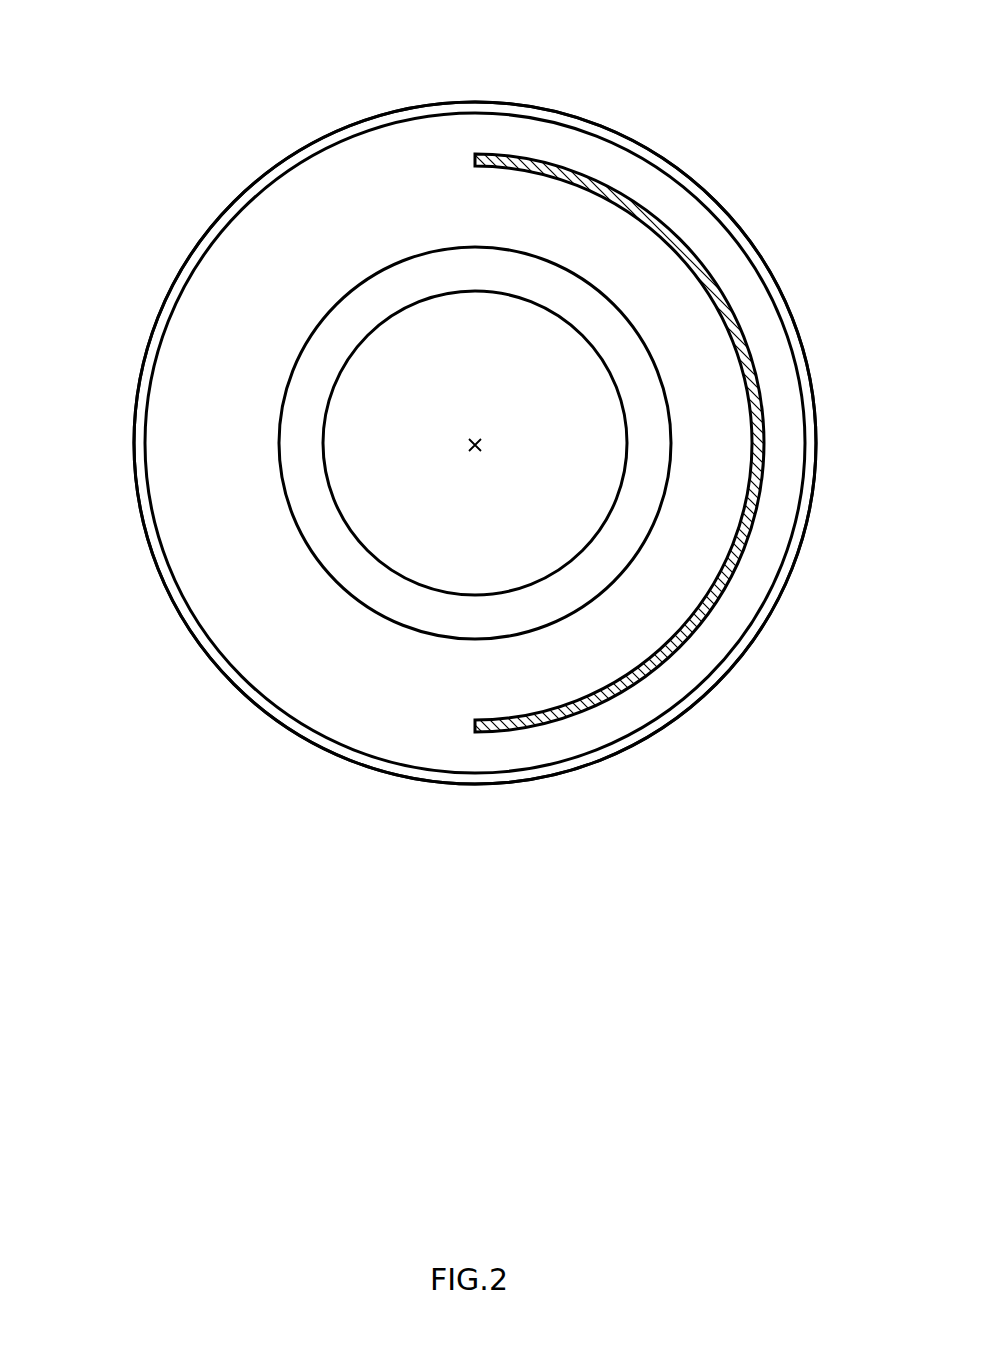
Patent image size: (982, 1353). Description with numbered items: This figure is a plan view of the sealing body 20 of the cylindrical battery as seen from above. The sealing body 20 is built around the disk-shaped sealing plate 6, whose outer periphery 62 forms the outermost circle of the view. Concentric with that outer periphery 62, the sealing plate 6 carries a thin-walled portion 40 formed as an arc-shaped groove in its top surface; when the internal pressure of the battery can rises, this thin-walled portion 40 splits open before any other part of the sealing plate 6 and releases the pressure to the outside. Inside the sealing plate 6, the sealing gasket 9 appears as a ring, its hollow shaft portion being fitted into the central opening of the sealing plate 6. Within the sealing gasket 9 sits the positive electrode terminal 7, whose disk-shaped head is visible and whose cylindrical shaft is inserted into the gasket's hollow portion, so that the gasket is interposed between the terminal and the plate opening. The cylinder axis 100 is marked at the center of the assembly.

The sealing body 20 is at (214, 88).
The sealing plate 6 is at (438, 145).
The thin-walled portion 40 is at (724, 294).
The sealing gasket 9 is at (307, 378).
The positive electrode terminal 7 is at (452, 578).
The outer periphery 62 is at (126, 517).
The cylinder axis 100 is at (468, 446).